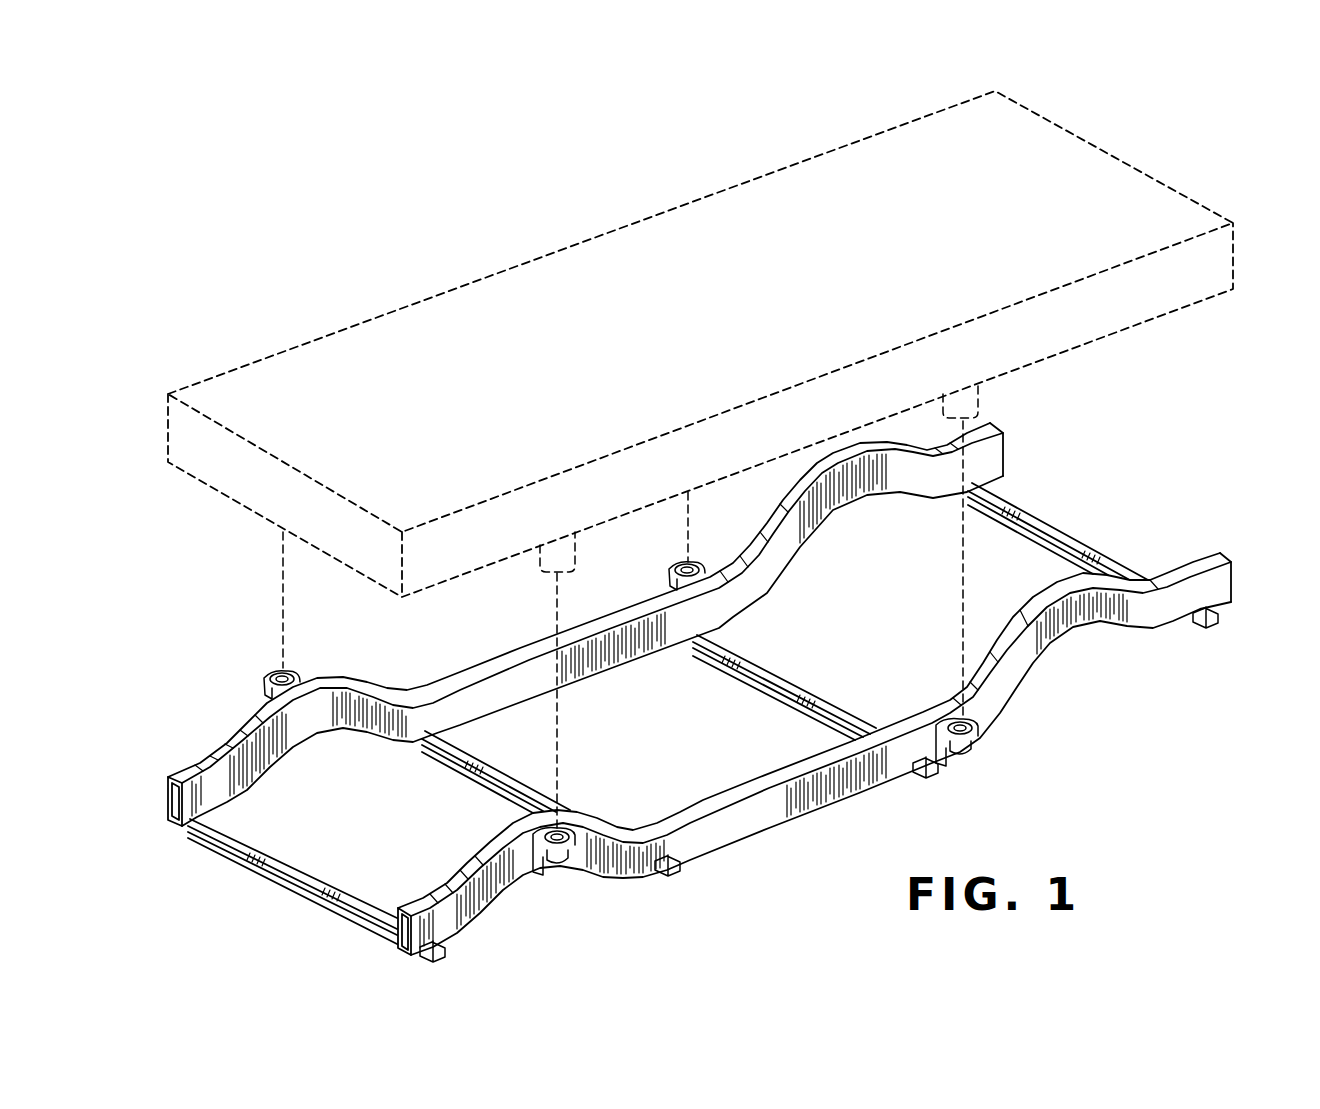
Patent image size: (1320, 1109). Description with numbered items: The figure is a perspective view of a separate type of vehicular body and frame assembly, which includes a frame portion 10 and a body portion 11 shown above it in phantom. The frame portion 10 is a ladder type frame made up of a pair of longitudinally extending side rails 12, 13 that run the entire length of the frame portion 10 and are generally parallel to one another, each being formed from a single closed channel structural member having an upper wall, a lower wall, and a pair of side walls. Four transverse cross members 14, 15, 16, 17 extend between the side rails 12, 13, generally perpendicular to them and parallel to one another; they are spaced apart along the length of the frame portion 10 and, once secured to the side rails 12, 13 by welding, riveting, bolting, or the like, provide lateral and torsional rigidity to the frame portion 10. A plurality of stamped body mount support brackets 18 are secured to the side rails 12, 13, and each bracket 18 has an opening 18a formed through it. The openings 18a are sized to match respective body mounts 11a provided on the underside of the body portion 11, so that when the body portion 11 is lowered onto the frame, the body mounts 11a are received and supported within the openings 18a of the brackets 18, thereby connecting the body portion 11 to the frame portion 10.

The frame portion 10 is at (695, 694).
The body portion 11 is at (1178, 352).
The body mounts 11a is at (543, 562).
The side rail 12 is at (592, 670).
The side rail 13 is at (757, 818).
The cross member 14 is at (308, 875).
The cross member 15 is at (452, 750).
The cross member 16 is at (787, 677).
The cross member 17 is at (1060, 530).
The body mount support bracket 18 is at (623, 728).
The opening 18a is at (290, 672).